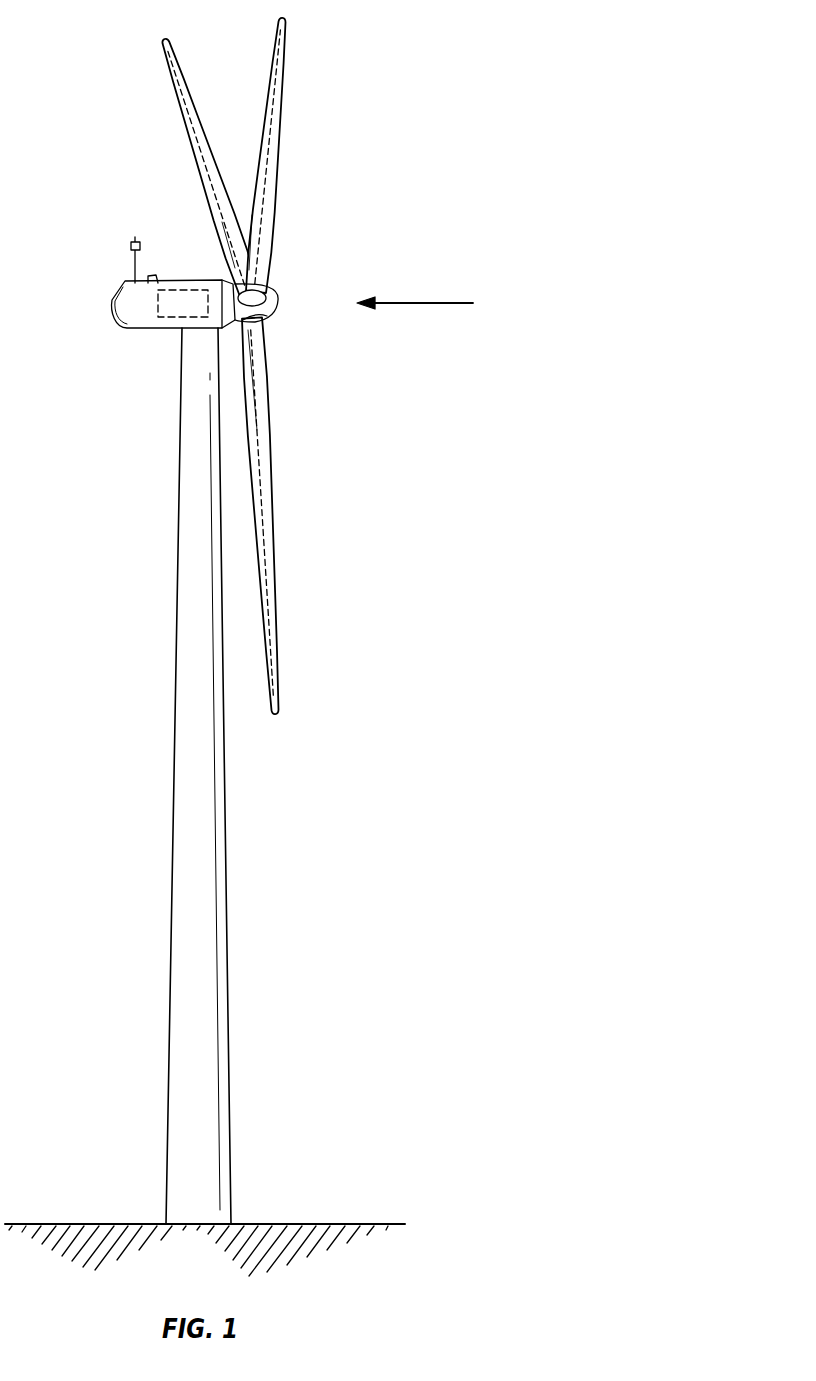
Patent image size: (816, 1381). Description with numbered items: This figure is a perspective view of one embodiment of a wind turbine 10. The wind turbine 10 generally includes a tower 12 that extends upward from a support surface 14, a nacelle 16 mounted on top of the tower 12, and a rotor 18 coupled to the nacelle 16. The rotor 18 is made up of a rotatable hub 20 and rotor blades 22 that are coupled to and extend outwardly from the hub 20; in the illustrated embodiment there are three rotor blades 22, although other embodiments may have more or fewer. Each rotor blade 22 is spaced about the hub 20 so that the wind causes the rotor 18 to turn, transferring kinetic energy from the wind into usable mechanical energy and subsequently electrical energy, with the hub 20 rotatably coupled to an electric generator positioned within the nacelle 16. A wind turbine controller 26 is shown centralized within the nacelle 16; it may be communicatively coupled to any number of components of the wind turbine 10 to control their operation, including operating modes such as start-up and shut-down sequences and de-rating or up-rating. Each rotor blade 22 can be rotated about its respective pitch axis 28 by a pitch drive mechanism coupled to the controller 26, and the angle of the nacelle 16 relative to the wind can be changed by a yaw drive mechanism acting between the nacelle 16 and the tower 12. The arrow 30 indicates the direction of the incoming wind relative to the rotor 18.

The wind turbine 10 is at (410, 140).
The tower 12 is at (200, 890).
The support surface 14 is at (124, 1224).
The nacelle 16 is at (145, 330).
The rotor 18 is at (315, 249).
The rotatable hub 20 is at (278, 300).
The rotor blade 22 is at (265, 133).
The wind turbine controller 26 is at (177, 290).
The pitch axis 28 is at (207, 183).
The wind direction 30 is at (433, 303).